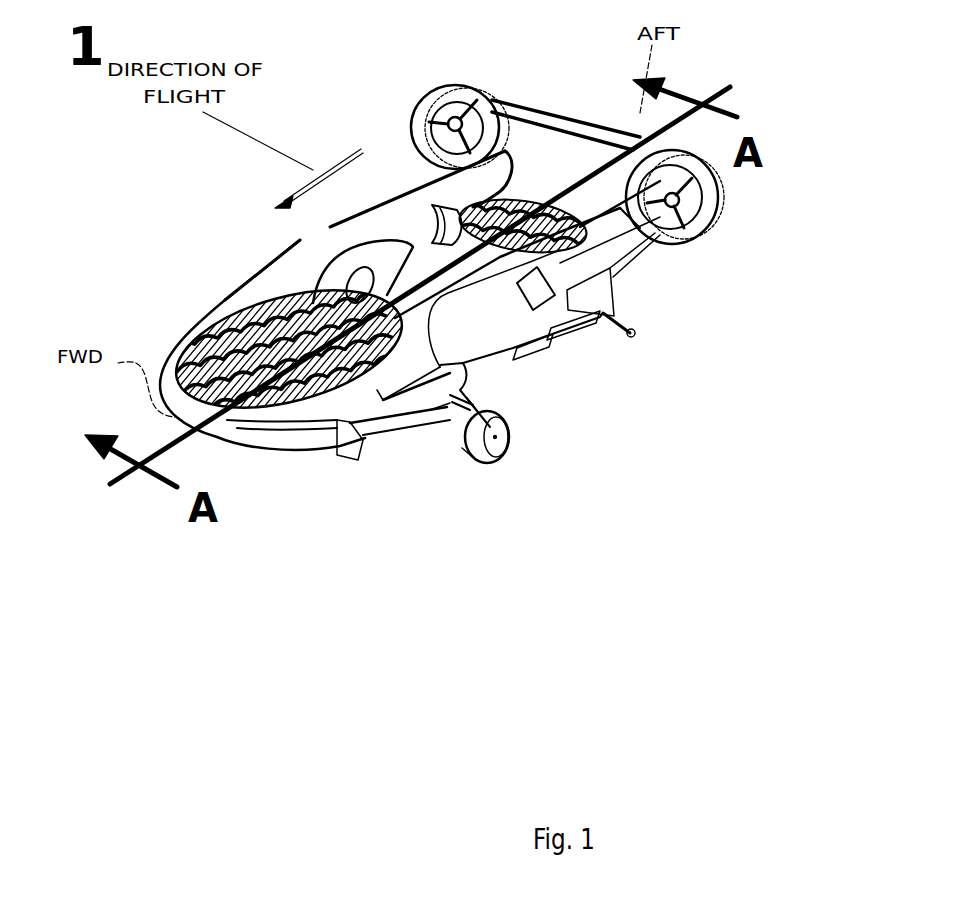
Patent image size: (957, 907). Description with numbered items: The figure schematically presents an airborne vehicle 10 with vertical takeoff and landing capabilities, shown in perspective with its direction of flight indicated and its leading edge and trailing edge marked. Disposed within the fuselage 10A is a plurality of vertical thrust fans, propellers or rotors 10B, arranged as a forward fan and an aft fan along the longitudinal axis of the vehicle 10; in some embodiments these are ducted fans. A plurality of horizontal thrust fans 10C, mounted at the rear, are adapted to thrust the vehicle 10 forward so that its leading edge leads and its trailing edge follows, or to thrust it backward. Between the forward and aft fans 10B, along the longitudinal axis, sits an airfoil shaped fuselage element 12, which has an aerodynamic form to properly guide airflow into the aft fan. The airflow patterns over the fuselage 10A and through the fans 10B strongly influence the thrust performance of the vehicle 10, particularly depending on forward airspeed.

The airborne vehicle 10 is at (708, 563).
The fuselage 10A is at (257, 307).
The vertical thrust fans 10B is at (520, 197).
The horizontal thrust fans 10C is at (640, 140).
The airfoil shaped fuselage element 12 is at (412, 242).